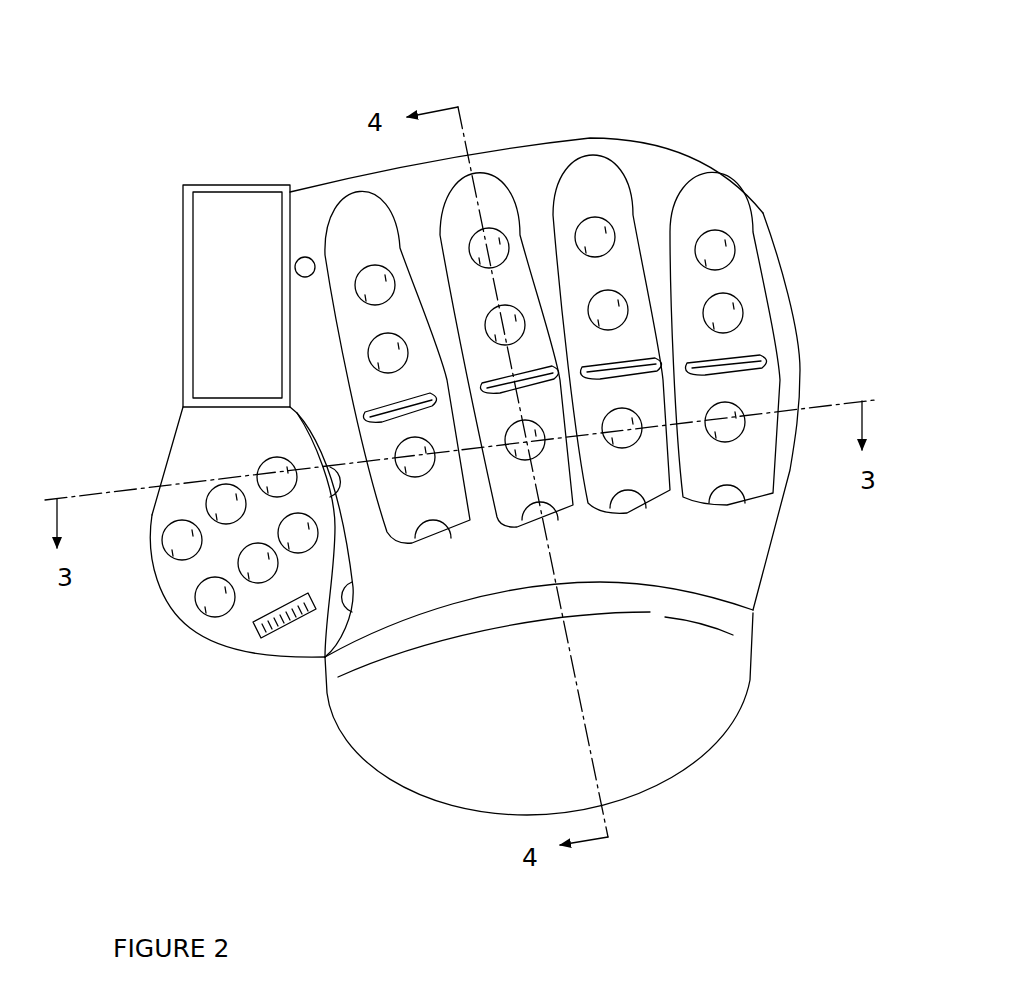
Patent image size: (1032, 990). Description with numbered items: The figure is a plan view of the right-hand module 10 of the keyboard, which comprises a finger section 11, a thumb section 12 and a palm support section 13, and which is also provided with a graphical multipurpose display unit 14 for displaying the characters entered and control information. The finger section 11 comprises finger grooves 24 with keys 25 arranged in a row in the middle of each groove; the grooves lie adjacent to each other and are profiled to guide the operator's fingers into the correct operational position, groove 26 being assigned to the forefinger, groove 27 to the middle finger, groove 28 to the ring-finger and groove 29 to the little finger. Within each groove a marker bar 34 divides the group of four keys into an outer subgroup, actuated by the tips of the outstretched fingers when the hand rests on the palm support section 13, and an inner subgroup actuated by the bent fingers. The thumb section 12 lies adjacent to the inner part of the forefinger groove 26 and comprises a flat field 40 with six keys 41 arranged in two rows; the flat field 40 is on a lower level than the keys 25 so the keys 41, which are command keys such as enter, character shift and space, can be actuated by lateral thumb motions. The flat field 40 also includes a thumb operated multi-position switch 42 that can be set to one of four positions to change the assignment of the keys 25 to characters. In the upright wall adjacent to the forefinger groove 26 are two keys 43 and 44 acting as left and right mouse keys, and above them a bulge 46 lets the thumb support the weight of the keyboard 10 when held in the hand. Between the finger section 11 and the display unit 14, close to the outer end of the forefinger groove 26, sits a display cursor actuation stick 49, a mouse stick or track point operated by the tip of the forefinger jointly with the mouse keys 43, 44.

The right-hand module 10 is at (727, 97).
The finger section 11 is at (535, 183).
The thumb section 12 is at (193, 628).
The palm support section 13 is at (660, 743).
The graphical multipurpose display unit 14 is at (210, 227).
The finger grooves 24 is at (645, 473).
The keys 25 is at (707, 233).
The forefinger groove 26 is at (352, 386).
The middle finger groove 27 is at (488, 173).
The ring-finger groove 28 is at (587, 155).
The little finger groove 29 is at (733, 188).
The marker bar 34 is at (750, 353).
The flat field 40 is at (193, 458).
The keys 41 is at (195, 602).
The thumb operated multi-position switch 42 is at (267, 637).
The key 43 is at (337, 483).
The key 44 is at (350, 597).
The bulge 46 is at (337, 537).
The display cursor actuation stick 49 is at (305, 257).